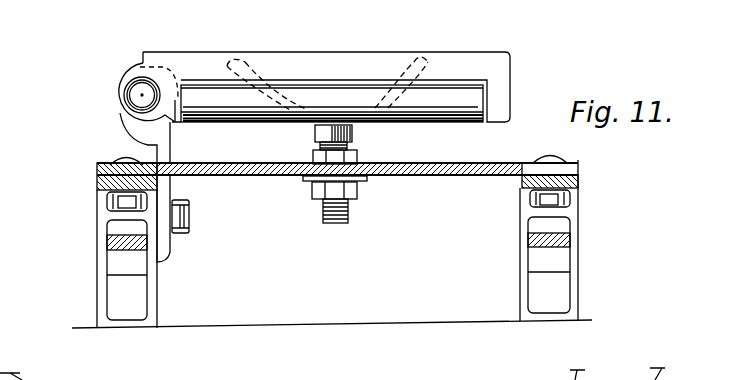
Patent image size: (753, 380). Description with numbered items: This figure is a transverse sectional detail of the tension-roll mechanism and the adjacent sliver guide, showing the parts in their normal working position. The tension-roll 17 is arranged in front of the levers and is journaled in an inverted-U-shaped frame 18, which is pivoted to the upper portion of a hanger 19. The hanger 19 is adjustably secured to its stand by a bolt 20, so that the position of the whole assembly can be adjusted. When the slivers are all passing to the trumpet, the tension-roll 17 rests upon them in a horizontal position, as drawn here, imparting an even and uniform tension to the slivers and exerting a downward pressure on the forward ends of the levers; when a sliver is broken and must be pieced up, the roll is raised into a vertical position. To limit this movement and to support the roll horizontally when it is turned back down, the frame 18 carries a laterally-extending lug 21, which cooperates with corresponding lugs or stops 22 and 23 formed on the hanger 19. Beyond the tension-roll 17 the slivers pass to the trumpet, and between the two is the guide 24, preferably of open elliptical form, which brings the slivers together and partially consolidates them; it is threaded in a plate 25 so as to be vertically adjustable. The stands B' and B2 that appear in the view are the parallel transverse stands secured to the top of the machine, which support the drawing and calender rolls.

The tension-roll 17 is at (435, 122).
The inverted-U-shaped frame 18 is at (458, 57).
The hanger 19 is at (110, 114).
The bolt 20 is at (192, 208).
The laterally-extending lug 21 is at (170, 62).
The lug or stop 22 is at (124, 95).
The lug or stop 23 is at (180, 122).
The guide 24 is at (418, 60).
The plate 25 is at (413, 172).
The stand B' is at (108, 243).
The stand B2 is at (572, 180).